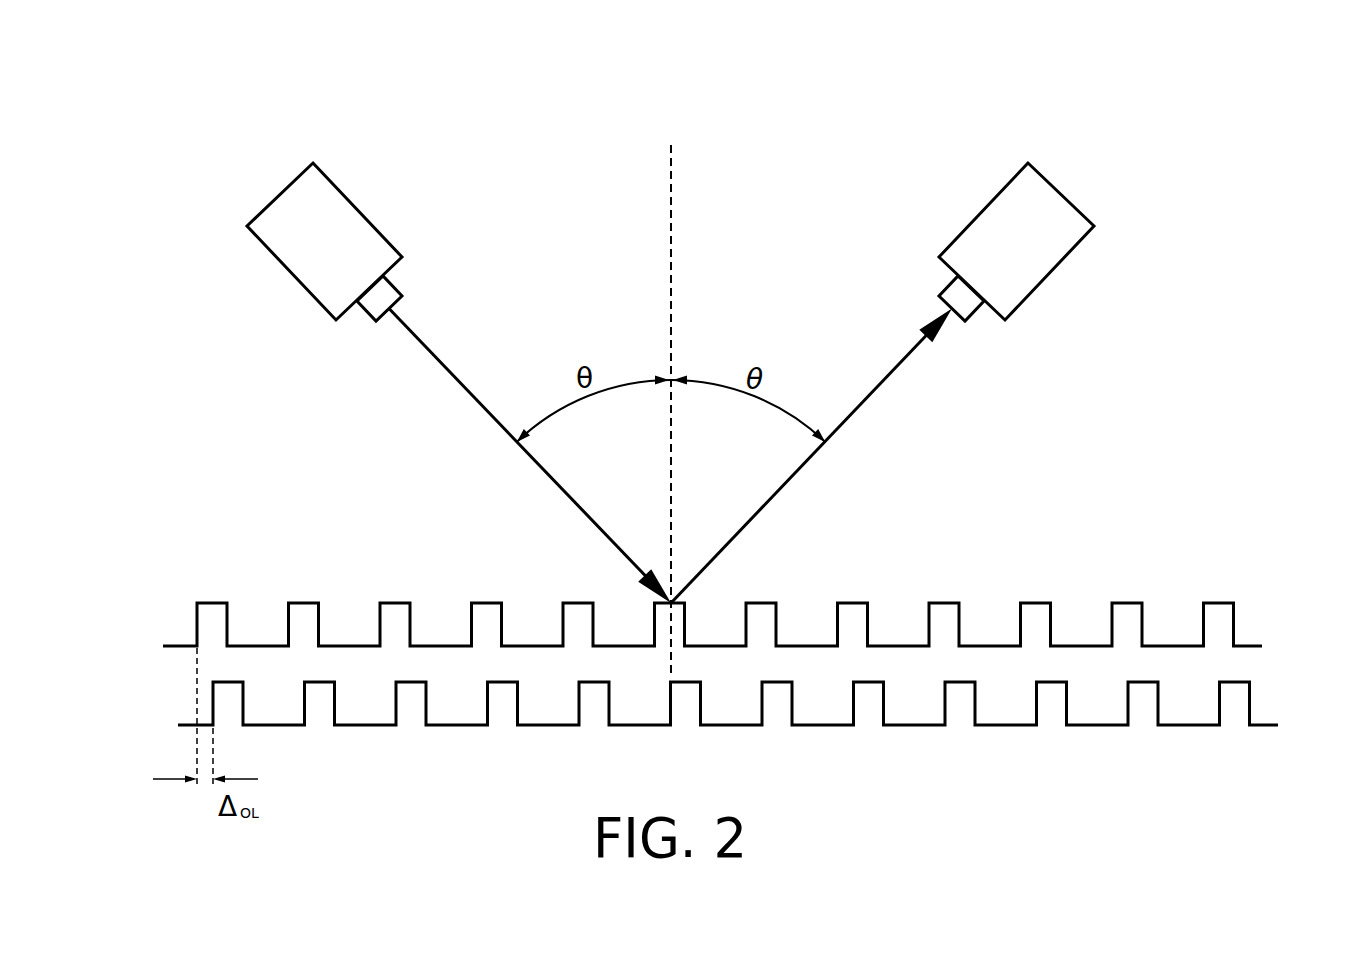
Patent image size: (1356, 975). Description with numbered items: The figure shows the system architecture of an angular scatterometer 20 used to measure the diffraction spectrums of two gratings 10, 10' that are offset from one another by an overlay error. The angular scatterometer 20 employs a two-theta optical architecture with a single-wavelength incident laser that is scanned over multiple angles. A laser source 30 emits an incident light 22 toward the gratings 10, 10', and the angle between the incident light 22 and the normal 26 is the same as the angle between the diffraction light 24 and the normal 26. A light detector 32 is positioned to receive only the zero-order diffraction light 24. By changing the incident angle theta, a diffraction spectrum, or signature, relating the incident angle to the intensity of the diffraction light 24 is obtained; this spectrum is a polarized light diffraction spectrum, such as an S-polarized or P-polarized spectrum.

The angular scatterometer 20 is at (856, 112).
The laser source 30 is at (360, 208).
The light detector 32 is at (981, 208).
The normal 26 is at (671, 197).
The incident light 22 is at (542, 472).
The diffraction light 24 is at (798, 472).
The grating 10 is at (738, 616).
The grating 10' is at (756, 694).